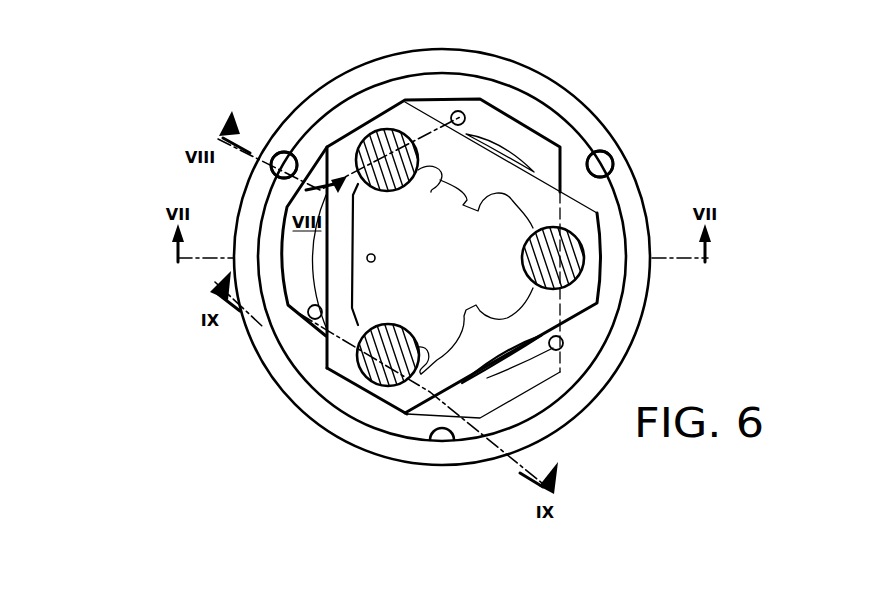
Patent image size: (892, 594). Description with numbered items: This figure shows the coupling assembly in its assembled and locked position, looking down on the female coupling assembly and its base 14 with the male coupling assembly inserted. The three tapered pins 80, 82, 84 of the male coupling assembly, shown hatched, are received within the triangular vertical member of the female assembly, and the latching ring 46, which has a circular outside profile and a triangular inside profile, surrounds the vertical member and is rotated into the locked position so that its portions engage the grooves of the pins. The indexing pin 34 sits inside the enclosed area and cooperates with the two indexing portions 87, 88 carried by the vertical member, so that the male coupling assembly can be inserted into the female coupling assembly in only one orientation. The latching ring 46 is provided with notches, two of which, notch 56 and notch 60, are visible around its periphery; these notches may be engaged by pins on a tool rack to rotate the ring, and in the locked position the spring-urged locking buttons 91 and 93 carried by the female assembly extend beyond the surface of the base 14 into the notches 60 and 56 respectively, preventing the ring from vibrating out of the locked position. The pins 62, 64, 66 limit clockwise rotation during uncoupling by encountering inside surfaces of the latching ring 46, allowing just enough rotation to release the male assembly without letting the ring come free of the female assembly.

The base 14 is at (528, 72).
The latching ring 46 is at (442, 90).
The notch 56 is at (596, 153).
The notch 60 is at (276, 180).
The locking button 91 is at (283, 164).
The locking button 93 is at (603, 164).
The pin 62 is at (465, 123).
The pin 64 is at (314, 305).
The pin 66 is at (540, 368).
The pin 80 is at (425, 340).
The pin 82 is at (536, 243).
The pin 84 is at (437, 183).
The indexing portion 87 is at (470, 207).
The indexing portion 88 is at (470, 298).
The indexing pin 34 is at (375, 256).